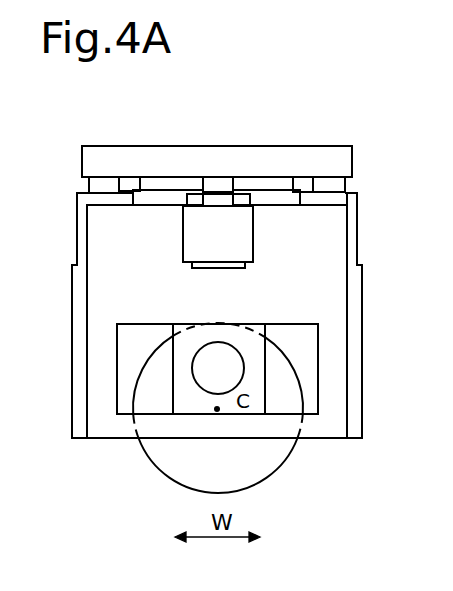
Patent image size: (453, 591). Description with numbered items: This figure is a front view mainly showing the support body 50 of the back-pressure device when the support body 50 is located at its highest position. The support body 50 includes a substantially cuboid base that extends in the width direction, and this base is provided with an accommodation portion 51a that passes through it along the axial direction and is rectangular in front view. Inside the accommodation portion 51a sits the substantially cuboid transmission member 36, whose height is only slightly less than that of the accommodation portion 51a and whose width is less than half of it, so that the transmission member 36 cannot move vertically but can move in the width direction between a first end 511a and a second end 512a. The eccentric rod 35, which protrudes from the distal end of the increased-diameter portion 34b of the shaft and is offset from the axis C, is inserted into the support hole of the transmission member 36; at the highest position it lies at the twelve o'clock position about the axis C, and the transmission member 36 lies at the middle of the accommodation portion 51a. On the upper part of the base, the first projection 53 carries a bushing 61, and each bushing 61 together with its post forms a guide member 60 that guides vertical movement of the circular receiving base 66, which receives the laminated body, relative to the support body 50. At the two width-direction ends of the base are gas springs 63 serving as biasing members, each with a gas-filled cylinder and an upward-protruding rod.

The receiving base 66 is at (352, 162).
The bushing 61 is at (138, 187).
The guide member 60 is at (219, 177).
The gas spring 63 is at (77, 222).
The first projection 53 is at (253, 231).
The support body 50 is at (362, 332).
The accommodation portion 51a is at (137, 322).
The transmission member 36 is at (175, 326).
The eccentric rod 35 is at (242, 345).
The increased-diameter portion 34b is at (275, 472).
The first end 511a is at (318, 372).
The second end 512a is at (117, 377).